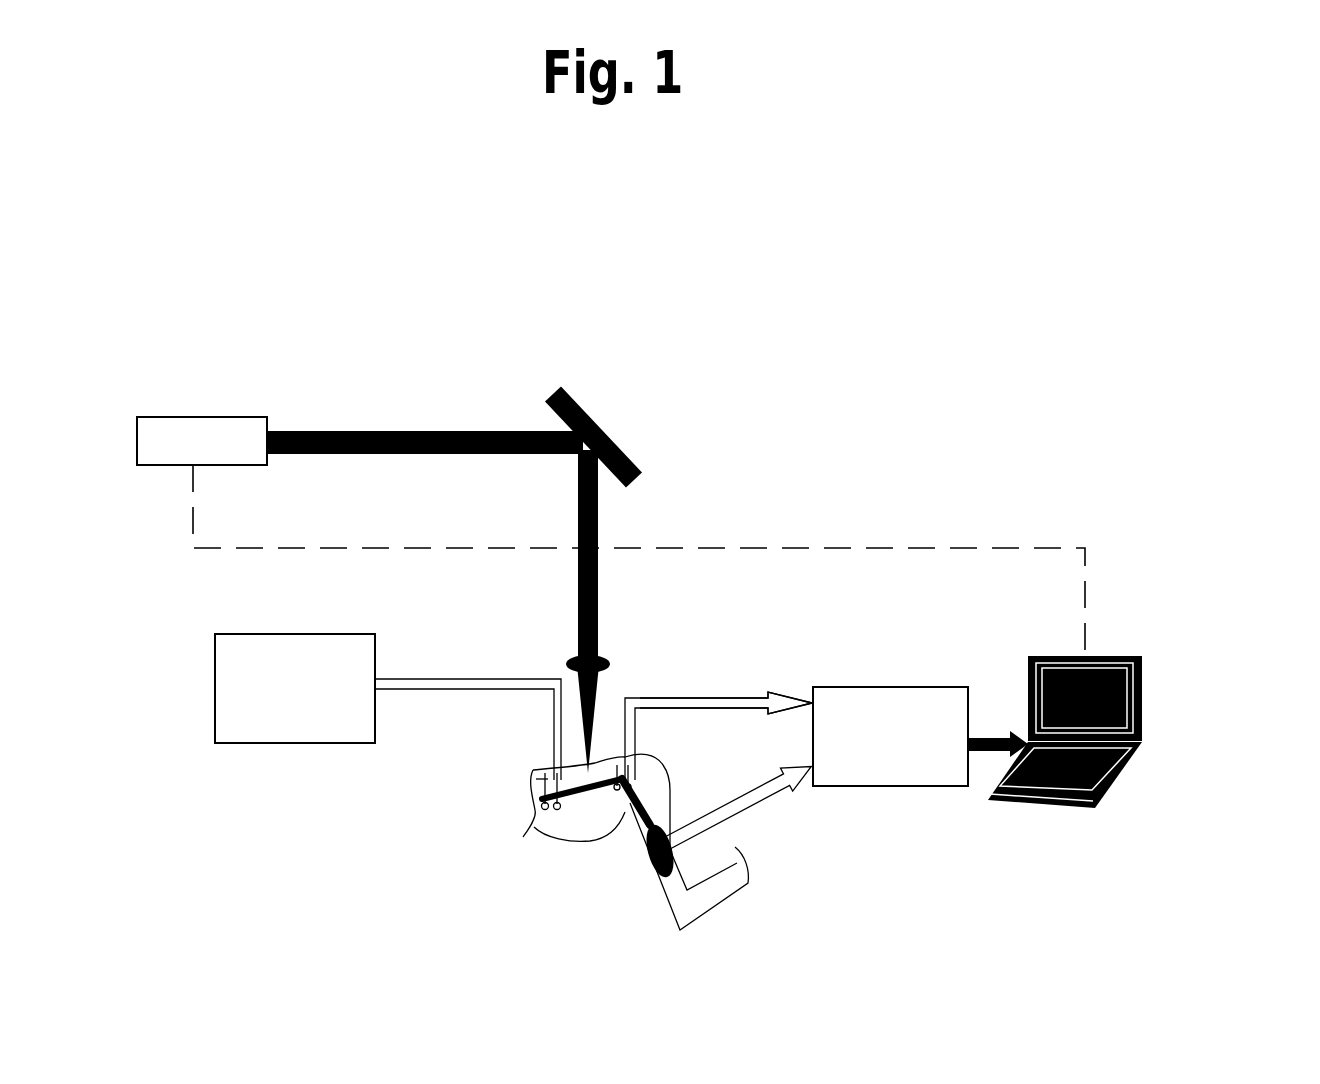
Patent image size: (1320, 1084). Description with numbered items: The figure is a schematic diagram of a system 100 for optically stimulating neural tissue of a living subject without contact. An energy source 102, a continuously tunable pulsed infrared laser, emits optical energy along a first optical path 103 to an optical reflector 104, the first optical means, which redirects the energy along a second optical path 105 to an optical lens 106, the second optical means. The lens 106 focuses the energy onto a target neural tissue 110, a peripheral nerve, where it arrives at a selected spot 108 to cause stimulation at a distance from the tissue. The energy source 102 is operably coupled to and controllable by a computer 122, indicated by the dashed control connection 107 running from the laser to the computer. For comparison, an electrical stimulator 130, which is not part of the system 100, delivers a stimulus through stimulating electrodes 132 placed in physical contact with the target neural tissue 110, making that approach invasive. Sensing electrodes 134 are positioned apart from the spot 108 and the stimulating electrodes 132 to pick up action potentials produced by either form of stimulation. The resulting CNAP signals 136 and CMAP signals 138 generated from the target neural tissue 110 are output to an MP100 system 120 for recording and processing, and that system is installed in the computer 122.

The system 100 is at (752, 285).
The energy source 102 is at (220, 417).
The optical path 103 is at (393, 432).
The optical reflector 104 is at (598, 432).
The optical path 105 is at (600, 535).
The optical lens 106 is at (605, 660).
The control connection 107 is at (875, 547).
The selected spot 108 is at (588, 773).
The target neural tissue 110 is at (642, 792).
The MP100 system 120 is at (889, 786).
The computer 122 is at (1142, 695).
The electrical stimulator 130 is at (285, 743).
The stimulating electrodes 132 is at (554, 780).
The sensing electrodes 134 is at (627, 785).
The CNAP signals 136 is at (692, 705).
The CMAP signals 138 is at (775, 783).